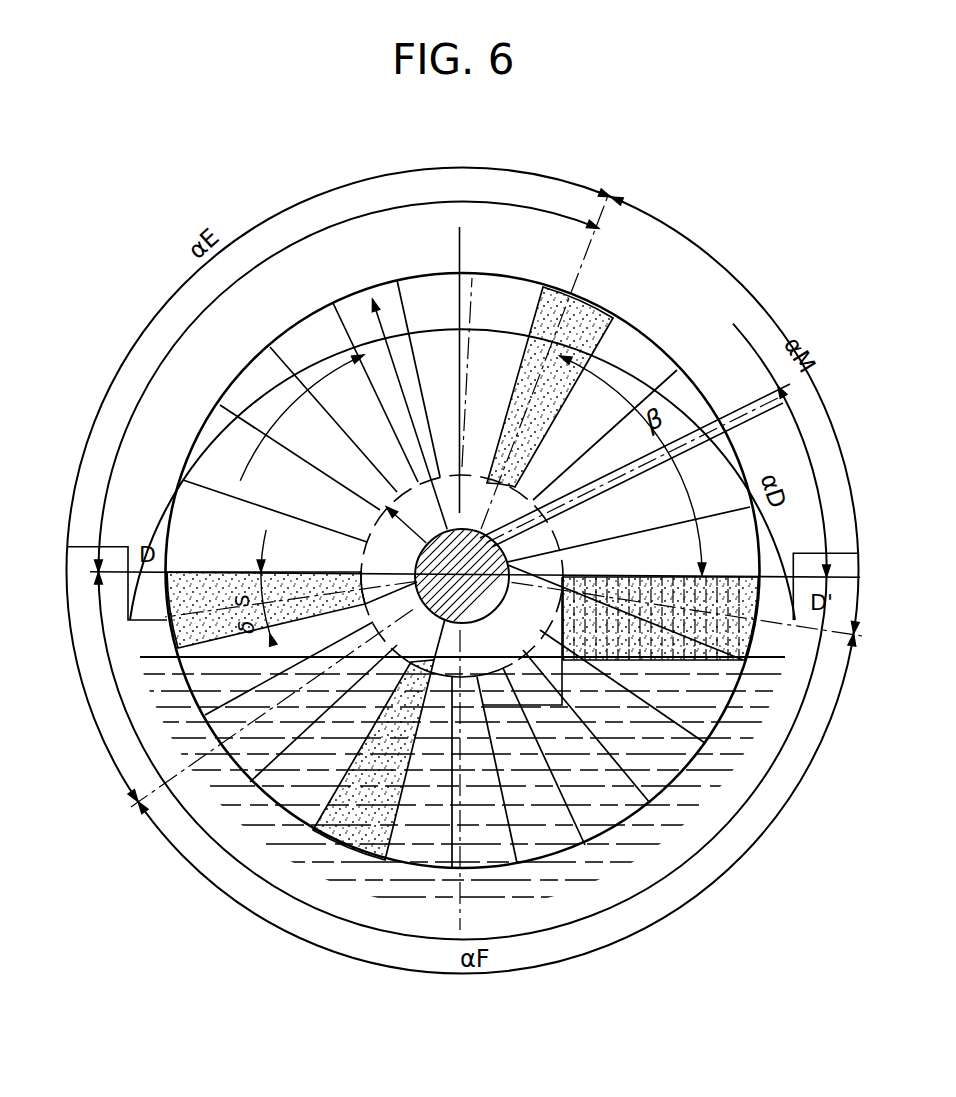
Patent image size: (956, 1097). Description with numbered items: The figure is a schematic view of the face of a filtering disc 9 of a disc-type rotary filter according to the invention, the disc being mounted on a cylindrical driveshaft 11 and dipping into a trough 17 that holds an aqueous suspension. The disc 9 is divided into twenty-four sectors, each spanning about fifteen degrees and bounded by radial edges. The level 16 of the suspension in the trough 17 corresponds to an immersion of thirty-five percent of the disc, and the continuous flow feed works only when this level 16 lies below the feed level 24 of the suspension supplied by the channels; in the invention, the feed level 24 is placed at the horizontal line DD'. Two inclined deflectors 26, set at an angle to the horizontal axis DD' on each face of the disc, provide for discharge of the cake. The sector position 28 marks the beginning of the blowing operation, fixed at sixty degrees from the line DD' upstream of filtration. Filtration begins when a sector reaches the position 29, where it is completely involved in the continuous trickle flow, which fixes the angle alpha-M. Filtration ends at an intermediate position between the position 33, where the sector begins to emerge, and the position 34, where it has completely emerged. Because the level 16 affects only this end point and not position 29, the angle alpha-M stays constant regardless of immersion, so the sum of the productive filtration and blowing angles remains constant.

The filtering disc 9 is at (432, 275).
The cylindrical driveshaft 11 is at (460, 529).
The level of the suspension in the trough 16 is at (284, 660).
The trough 17 is at (655, 848).
The feed level 24 is at (718, 577).
The inclined deflector 26 is at (700, 430).
The sector position at the beginning of blowing 28 is at (552, 307).
The sector position at the beginning of filtration 29 is at (800, 716).
The sector position at the beginning of emergence 33 is at (370, 834).
The sector position at complete emergence 34 is at (205, 592).